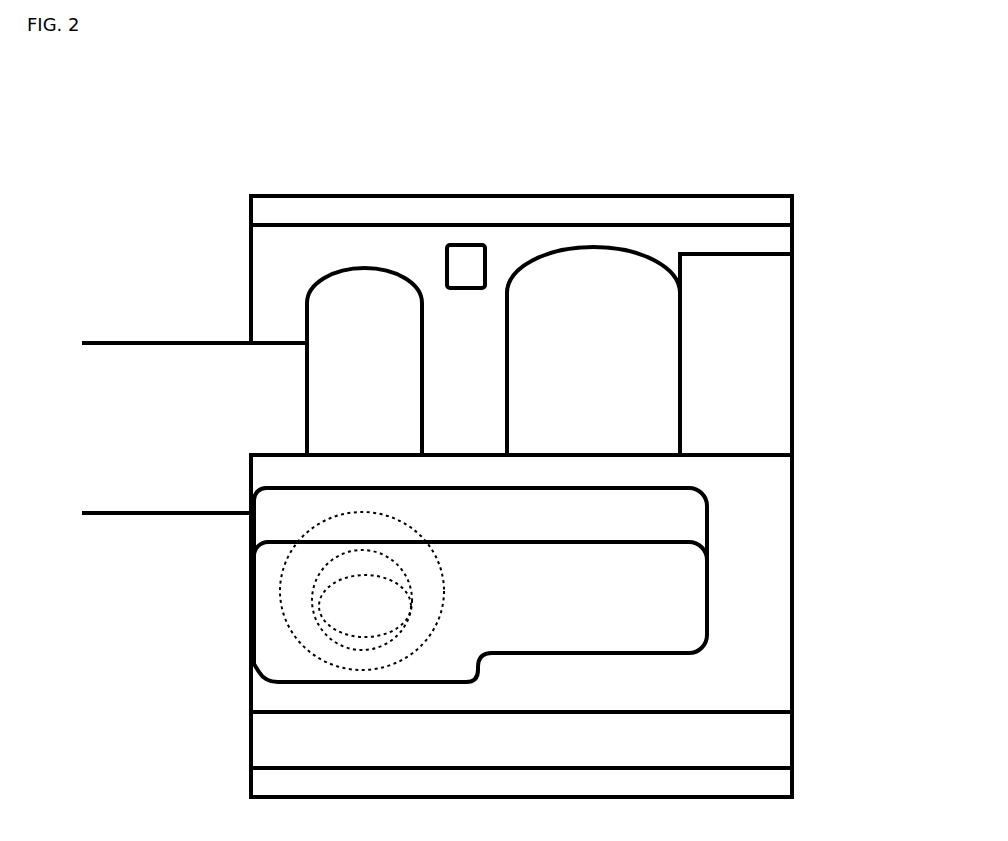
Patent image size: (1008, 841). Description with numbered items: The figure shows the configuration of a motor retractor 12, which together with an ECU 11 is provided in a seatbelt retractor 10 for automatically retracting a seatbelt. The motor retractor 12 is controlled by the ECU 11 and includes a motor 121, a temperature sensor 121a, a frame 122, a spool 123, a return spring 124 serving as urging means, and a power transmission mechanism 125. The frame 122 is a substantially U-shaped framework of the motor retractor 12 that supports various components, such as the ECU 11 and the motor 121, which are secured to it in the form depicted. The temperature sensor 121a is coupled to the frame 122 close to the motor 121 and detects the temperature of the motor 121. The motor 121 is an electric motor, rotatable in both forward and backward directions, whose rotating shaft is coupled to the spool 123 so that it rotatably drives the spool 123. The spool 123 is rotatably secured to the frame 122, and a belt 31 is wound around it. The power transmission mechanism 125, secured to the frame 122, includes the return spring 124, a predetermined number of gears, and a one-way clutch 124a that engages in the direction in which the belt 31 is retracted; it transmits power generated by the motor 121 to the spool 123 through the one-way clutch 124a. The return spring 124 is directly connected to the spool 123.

The seatbelt retractor 10 is at (785, 148).
The ECU 11 is at (770, 363).
The motor retractor 12 is at (523, 171).
The belt 31 is at (133, 352).
The motor 121 is at (617, 262).
The temperature sensor 121a is at (460, 252).
The frame 122 is at (352, 203).
The spool 123 is at (323, 313).
The return spring 124 is at (285, 623).
The one-way clutch 124a is at (323, 640).
The power transmission mechanism 125 is at (692, 602).